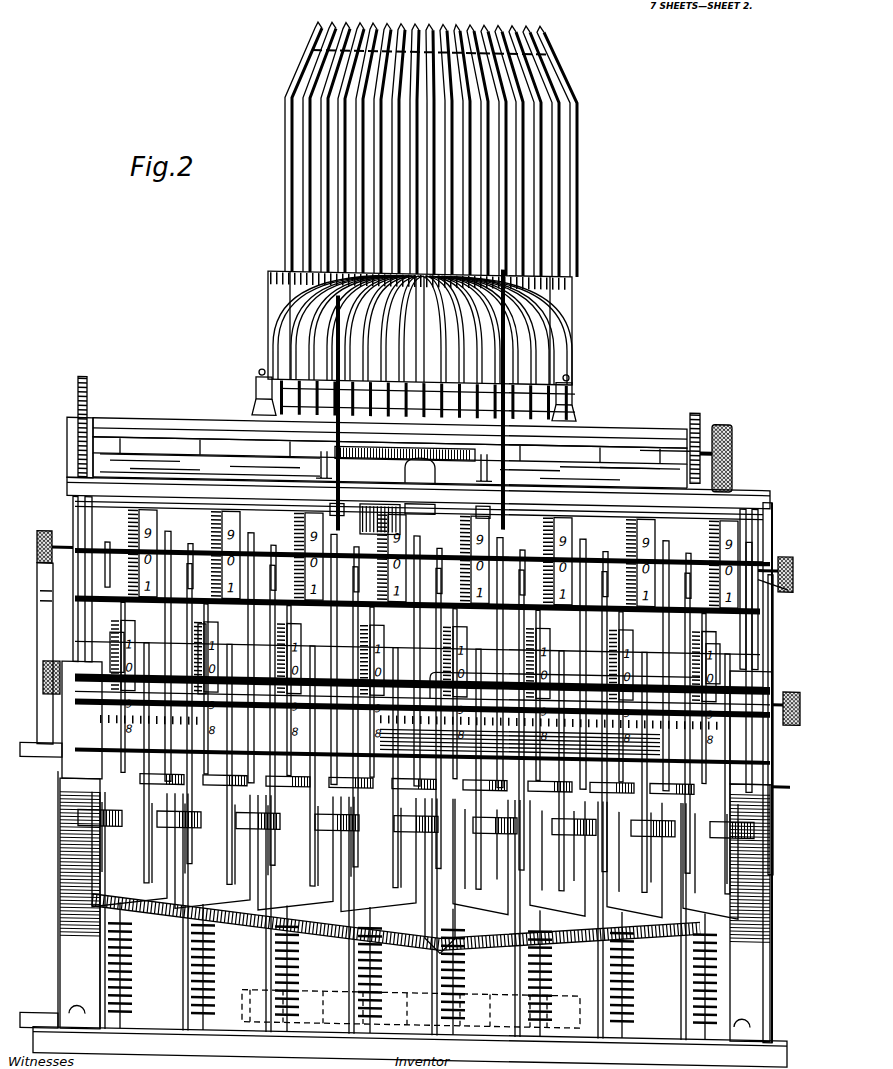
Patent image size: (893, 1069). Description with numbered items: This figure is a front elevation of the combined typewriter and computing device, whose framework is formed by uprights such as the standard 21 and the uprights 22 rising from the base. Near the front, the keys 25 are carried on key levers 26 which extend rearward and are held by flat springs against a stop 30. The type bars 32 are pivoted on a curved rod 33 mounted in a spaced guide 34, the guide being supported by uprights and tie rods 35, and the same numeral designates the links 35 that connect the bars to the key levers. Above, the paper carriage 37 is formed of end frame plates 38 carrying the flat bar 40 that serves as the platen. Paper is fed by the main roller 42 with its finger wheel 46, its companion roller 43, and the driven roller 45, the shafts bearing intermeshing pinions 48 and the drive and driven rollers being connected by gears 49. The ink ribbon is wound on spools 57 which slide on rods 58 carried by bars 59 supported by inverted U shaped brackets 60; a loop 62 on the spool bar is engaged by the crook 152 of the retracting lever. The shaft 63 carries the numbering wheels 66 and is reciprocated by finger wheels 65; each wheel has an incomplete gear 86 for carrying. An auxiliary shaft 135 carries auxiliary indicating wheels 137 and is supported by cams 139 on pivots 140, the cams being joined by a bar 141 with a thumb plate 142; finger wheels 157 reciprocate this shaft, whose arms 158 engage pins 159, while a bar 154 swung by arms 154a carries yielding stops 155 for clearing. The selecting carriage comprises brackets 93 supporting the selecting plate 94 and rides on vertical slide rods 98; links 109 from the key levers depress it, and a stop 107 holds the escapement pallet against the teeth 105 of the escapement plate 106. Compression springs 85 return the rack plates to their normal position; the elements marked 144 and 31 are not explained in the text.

The type bars 32 is at (548, 190).
The spaced guide 34 is at (270, 286).
The inverted U shaped brackets 60 is at (336, 300).
The links 35 is at (283, 395).
The rod 33 is at (258, 368).
The paper carriage 37 is at (390, 439).
The flat bar 40 is at (148, 455).
The end frame plates 38 is at (88, 468).
The driven roller 45 is at (180, 520).
The main roller 42 is at (618, 452).
The companion roller 43 is at (660, 428).
The bars 59 is at (385, 450).
The thumb plate 142 is at (437, 471).
The rods 58 is at (320, 460).
The crook 152 is at (419, 498).
The spools 57 is at (345, 476).
The loop 62 is at (380, 516).
The bar 141 is at (752, 477).
The gears 49 is at (78, 390).
The intermeshing pinions 48 is at (696, 400).
The finger wheel 46 is at (732, 425).
The cams 139 is at (72, 503).
The finger wheels 157 is at (44, 530).
The arms 154a is at (789, 593).
The uprights 22 is at (168, 560).
The pivots 140 is at (78, 525).
The auxiliary numbering or indicating wheels 137 is at (248, 530).
The auxiliary shaft 135 is at (563, 694).
The arms 158 is at (140, 588).
The yielding stops 155 is at (240, 590).
The pins 159 is at (320, 590).
The bar 154 is at (428, 580).
The vertical slide rods 98 is at (54, 616).
The numbering or indicating wheels 66 is at (110, 652).
The gear 86 is at (198, 650).
The links 109 is at (470, 660).
The finger wheels 65 is at (42, 681).
The side plate 144 is at (82, 720).
The shaft 63 is at (772, 664).
The stop 107 is at (751, 688).
The vertical arms or brackets 93 is at (200, 712).
The teeth 105 is at (630, 722).
The escapement plate 106 is at (690, 730).
The selecting plate 94 is at (785, 788).
The keys 25 is at (192, 782).
The key levers 26 is at (154, 918).
The stop 30 is at (496, 888).
The compression springs 85 is at (134, 980).
The box 31 is at (392, 1000).
The upright 21 is at (60, 792).